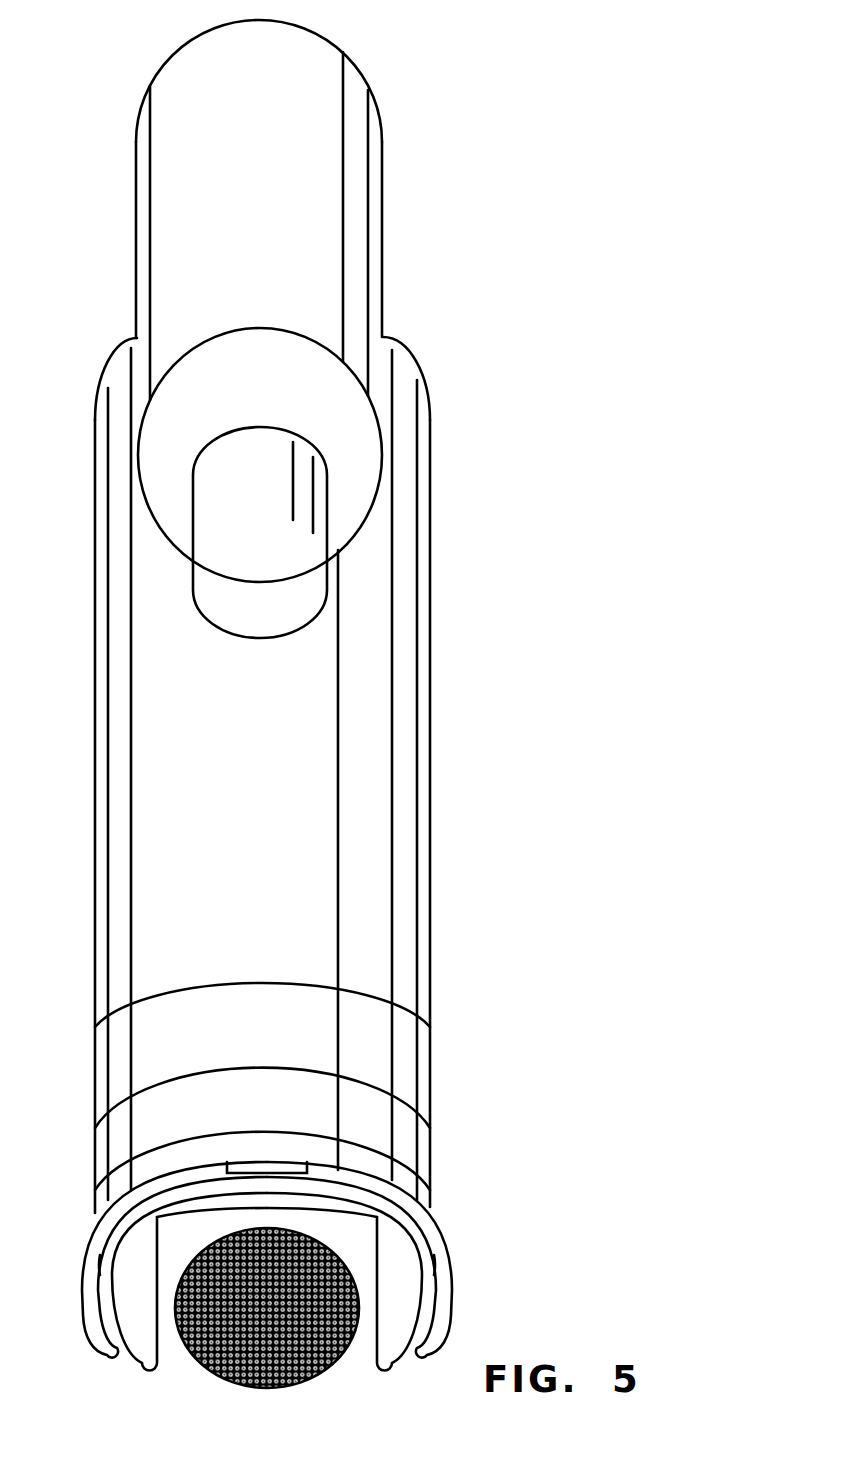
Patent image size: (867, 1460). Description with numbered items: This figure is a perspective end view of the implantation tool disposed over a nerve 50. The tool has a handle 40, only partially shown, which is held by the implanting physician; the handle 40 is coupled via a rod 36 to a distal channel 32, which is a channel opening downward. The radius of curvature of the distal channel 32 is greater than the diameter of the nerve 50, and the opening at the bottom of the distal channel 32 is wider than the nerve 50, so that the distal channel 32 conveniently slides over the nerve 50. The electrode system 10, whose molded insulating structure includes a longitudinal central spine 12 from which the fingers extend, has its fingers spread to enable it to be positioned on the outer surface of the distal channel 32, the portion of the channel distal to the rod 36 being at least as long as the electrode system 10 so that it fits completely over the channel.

The electrode system 10 is at (363, 777).
The central spine 12 is at (270, 1168).
The distal channel 32 is at (142, 1370).
The rod 36 is at (293, 595).
The handle 40 is at (332, 189).
The nerve 50 is at (313, 1377).